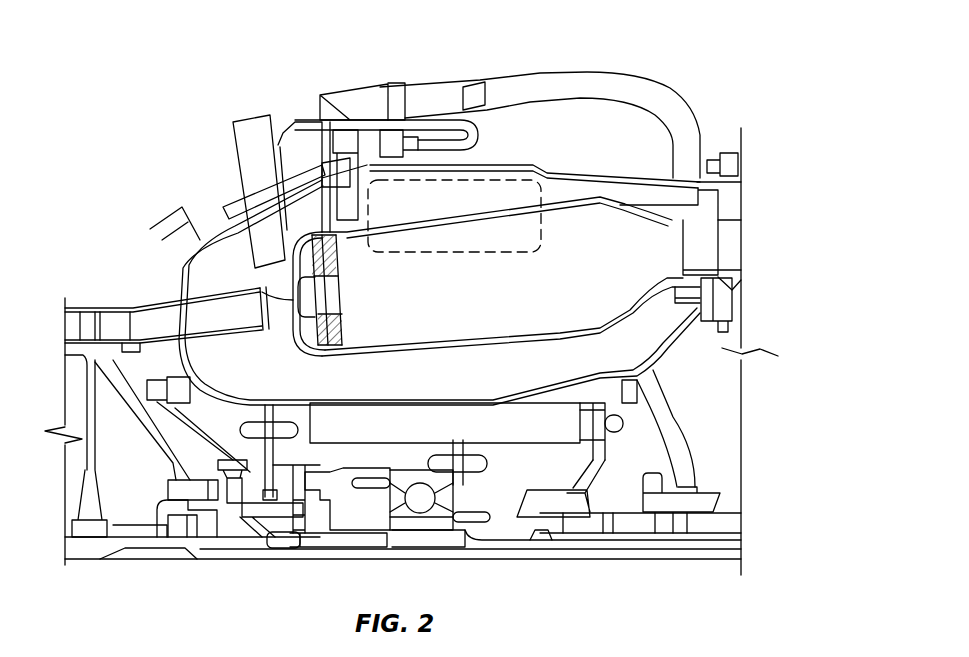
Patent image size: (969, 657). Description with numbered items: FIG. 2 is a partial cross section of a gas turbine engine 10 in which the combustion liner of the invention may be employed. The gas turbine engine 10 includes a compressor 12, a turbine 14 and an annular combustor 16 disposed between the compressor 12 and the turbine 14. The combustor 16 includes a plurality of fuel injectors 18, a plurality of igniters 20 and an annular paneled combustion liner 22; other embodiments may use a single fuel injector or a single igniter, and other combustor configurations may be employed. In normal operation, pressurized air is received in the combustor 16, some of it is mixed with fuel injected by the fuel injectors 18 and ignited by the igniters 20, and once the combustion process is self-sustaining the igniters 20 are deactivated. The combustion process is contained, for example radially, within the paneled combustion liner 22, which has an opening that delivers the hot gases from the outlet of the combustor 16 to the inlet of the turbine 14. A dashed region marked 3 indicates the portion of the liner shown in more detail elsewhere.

The gas turbine engine 10 is at (162, 92).
The compressor 12 is at (100, 280).
The turbine 14 is at (685, 55).
The combustor 16 is at (604, 140).
The fuel injectors 18 is at (297, 225).
The igniters 20 is at (349, 90).
The annular paneled combustion liner 22 is at (417, 356).
The sensor mounting region 3 is at (500, 178).